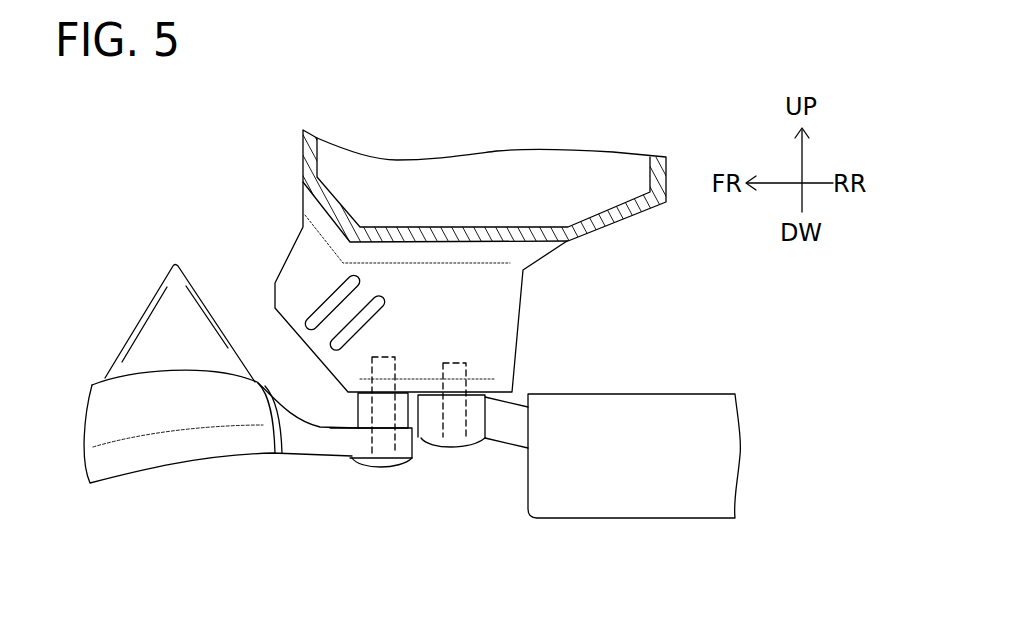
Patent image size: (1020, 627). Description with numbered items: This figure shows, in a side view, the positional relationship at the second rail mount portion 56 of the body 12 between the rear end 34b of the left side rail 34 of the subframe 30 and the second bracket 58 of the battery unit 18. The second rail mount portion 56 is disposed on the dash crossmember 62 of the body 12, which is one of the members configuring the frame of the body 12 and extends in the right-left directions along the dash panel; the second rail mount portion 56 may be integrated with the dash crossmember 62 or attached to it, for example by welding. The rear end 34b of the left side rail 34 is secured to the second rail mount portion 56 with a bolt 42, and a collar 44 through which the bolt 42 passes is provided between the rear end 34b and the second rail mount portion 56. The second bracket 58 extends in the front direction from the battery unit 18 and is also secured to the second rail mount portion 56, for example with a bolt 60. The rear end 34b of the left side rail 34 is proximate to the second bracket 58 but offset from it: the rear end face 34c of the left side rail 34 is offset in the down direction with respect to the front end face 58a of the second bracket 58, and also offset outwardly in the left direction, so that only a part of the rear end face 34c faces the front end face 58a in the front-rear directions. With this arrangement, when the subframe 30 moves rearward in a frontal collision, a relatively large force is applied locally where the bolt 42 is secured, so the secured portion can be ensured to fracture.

The body 12 is at (575, 128).
The dash crossmember 62 is at (302, 158).
The subframe 30 is at (373, 280).
The second rail mount portion 56 is at (428, 287).
The bolt 42 is at (357, 382).
The collar 44 is at (357, 413).
The left side rail 34 is at (250, 438).
The rear end of the left side rail 34b is at (350, 447).
The rear end face of the left side rail 34c is at (425, 450).
The second bracket 58 is at (531, 475).
The front end face of the second bracket 58a is at (445, 447).
The bolt 60 is at (470, 373).
The battery unit 18 is at (587, 505).